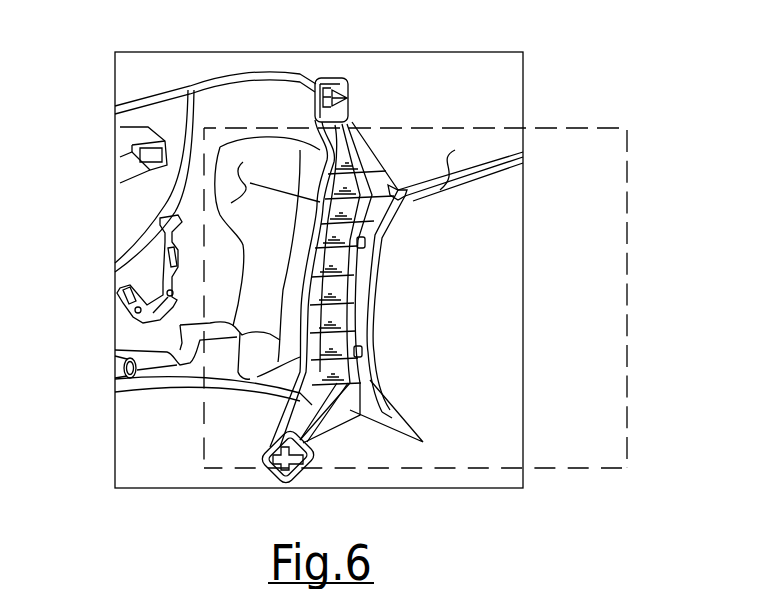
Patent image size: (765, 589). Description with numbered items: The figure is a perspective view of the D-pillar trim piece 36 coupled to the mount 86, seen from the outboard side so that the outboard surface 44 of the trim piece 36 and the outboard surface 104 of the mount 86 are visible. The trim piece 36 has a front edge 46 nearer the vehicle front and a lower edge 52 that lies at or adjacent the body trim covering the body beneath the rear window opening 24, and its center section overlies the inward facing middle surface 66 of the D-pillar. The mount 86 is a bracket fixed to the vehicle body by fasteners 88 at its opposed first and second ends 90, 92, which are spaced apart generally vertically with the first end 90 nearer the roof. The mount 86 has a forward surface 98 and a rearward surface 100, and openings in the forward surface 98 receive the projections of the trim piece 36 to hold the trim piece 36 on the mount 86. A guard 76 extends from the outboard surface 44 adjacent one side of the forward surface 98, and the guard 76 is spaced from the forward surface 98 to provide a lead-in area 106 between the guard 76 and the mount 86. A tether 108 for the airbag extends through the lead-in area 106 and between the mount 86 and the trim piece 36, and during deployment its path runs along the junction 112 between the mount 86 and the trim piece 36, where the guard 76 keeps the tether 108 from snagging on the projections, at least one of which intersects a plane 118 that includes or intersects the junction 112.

The rear window opening 24 is at (493, 373).
The D-pillar trim piece 36 is at (137, 218).
The outboard surface 44 is at (163, 116).
The front edge 46 is at (398, 410).
The lower edge 52 is at (192, 380).
The inward facing middle surface 66 is at (253, 158).
The guard 76 is at (298, 300).
The mount 86 is at (370, 273).
The fasteners 88 is at (342, 84).
The first end 90 is at (335, 88).
The second end 92 is at (278, 456).
The forward surface 98 is at (363, 327).
The rearward surface 100 is at (278, 360).
The outboard surface 104 is at (350, 182).
The lead-in area 106 is at (392, 184).
The tether 108 is at (273, 189).
The junction 112 is at (372, 380).
The plane 118 is at (627, 193).